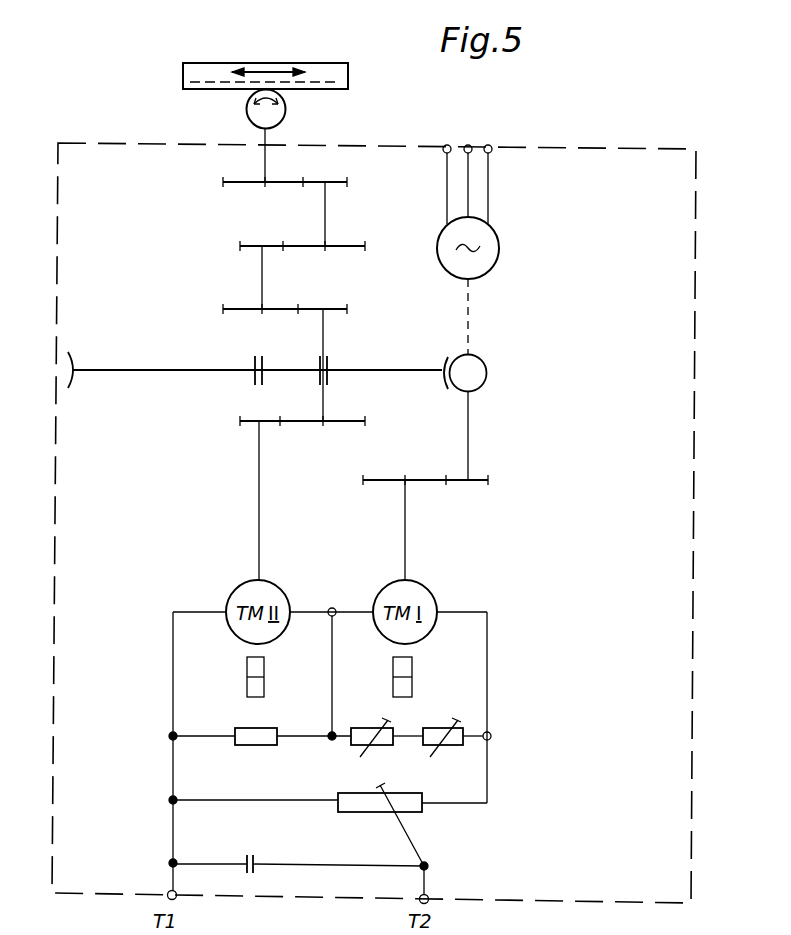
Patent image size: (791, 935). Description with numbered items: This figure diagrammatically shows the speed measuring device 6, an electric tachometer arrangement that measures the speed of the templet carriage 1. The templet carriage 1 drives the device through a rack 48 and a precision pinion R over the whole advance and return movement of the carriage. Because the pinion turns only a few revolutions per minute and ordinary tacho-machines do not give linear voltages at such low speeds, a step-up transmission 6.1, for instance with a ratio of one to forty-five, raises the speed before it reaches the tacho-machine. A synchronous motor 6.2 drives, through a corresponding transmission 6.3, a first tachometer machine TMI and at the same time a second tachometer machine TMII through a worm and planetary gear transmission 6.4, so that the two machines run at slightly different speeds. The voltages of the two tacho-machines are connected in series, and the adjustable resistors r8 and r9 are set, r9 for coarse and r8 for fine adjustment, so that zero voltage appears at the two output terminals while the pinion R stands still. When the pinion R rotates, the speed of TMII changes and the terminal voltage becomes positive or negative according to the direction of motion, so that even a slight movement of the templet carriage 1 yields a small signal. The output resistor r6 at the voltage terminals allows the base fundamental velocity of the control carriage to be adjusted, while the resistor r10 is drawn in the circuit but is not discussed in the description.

The templet carriage 1 is at (340, 70).
The rack 48 is at (287, 111).
The speed measuring device 6 is at (605, 160).
The step-up transmission 6.1 is at (264, 246).
The synchronous motor 6.2 is at (499, 250).
The transmission 6.3 is at (470, 478).
The worm and planetary gear transmission 6.4 is at (489, 418).
The output resistor r6 is at (381, 817).
The adjustable resistor r8 is at (370, 731).
The adjustable resistor r9 is at (441, 731).
The resistor r10 is at (256, 725).